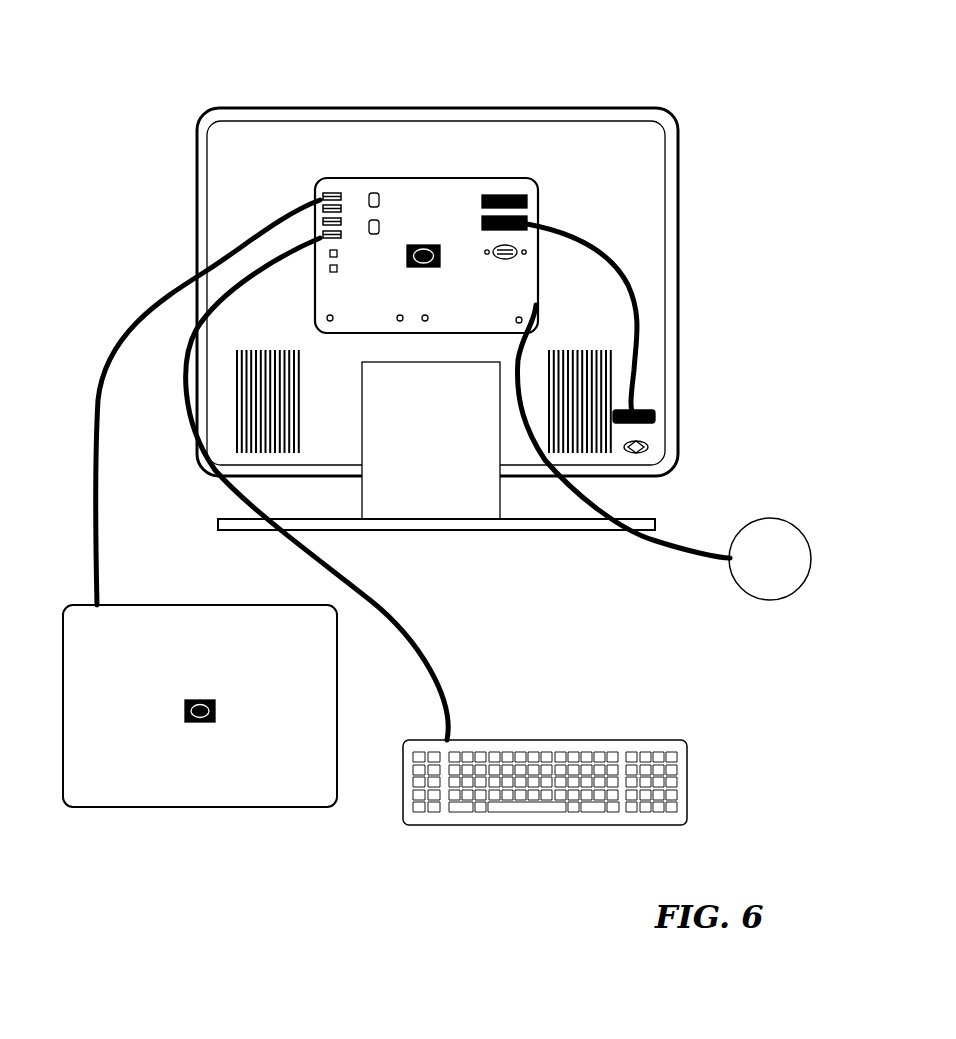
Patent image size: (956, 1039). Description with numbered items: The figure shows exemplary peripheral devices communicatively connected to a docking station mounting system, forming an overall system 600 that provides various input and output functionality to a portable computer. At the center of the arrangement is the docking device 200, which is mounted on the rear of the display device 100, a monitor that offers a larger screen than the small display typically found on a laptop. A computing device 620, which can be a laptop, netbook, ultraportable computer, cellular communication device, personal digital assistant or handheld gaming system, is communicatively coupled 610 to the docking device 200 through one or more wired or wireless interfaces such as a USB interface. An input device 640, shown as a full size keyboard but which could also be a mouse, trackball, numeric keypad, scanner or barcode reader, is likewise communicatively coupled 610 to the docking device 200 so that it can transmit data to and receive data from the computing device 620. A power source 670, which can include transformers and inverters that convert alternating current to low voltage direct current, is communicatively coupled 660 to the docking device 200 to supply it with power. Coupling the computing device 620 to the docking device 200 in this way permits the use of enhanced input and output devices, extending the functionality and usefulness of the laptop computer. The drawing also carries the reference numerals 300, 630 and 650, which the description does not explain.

The system 600 is at (688, 44).
The display device 100 is at (372, 108).
The docking device 200 is at (346, 181).
The connector panel / ports 300 is at (530, 181).
The communicative coupling 610 is at (98, 460).
The computing device 620 is at (183, 808).
The keyboard cable 630 is at (433, 648).
The input device 640 is at (558, 738).
The display power cable 650 is at (640, 300).
The communicative coupling 660 is at (690, 522).
The power source 670 is at (766, 518).